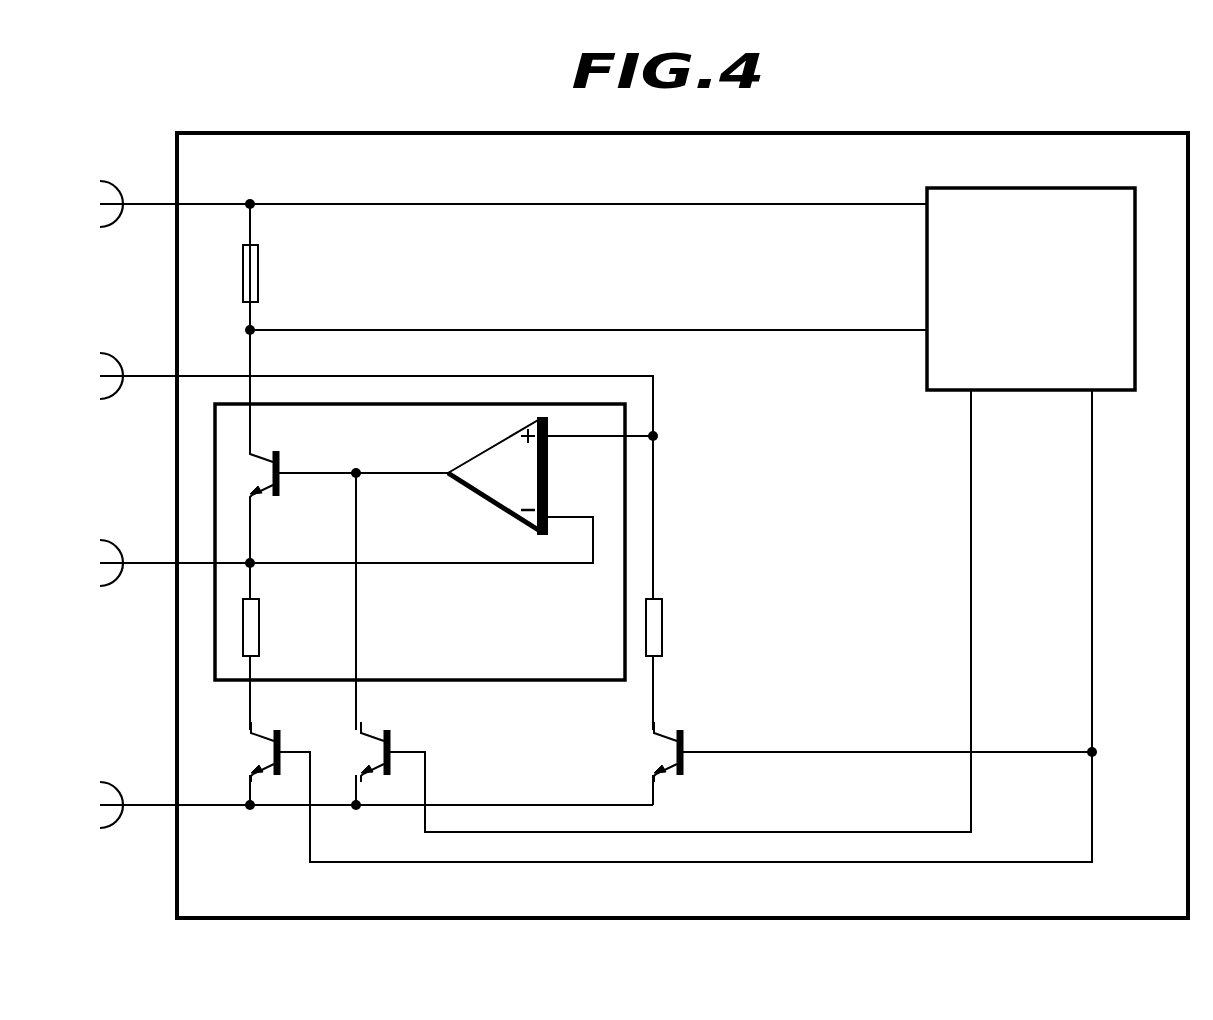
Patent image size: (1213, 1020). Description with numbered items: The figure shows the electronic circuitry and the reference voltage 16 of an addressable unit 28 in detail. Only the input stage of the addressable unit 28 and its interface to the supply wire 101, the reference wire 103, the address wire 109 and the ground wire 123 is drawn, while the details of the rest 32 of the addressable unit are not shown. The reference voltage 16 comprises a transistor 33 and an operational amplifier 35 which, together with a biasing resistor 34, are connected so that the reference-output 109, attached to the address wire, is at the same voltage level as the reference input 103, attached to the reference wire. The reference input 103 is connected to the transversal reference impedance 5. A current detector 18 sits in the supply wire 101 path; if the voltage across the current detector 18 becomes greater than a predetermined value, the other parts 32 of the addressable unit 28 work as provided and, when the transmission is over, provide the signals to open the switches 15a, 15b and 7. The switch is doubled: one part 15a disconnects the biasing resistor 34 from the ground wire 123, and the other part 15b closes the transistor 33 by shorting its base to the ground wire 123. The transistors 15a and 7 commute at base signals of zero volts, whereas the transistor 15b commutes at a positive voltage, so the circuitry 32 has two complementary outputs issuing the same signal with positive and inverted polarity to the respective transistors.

The addressable unit 28 is at (1118, 135).
The rest of the addressable unit 32 is at (1137, 295).
The supply wire 101 is at (150, 210).
The reference wire 103 is at (150, 382).
The address wire 109 is at (150, 570).
The ground wire 123 is at (152, 812).
The current detector 18 is at (260, 282).
The reference voltage 16 is at (555, 685).
The transistor 33 is at (290, 462).
The biasing resistor 34 is at (260, 630).
The operational amplifier 35 is at (466, 495).
The transversal reference impedance 5 is at (663, 630).
The switch part 15a is at (285, 745).
The switch part 15b is at (395, 745).
The switch 7 is at (657, 750).